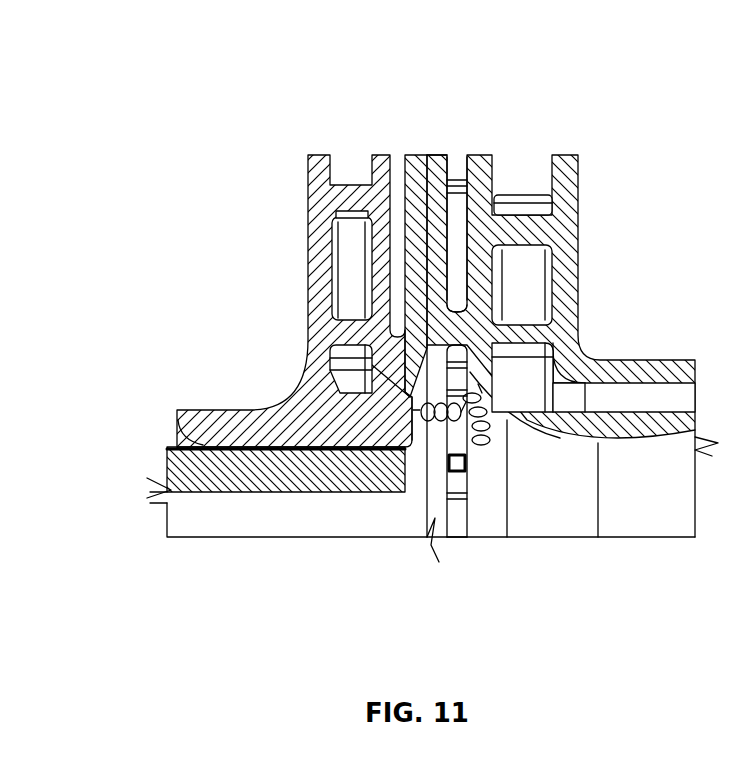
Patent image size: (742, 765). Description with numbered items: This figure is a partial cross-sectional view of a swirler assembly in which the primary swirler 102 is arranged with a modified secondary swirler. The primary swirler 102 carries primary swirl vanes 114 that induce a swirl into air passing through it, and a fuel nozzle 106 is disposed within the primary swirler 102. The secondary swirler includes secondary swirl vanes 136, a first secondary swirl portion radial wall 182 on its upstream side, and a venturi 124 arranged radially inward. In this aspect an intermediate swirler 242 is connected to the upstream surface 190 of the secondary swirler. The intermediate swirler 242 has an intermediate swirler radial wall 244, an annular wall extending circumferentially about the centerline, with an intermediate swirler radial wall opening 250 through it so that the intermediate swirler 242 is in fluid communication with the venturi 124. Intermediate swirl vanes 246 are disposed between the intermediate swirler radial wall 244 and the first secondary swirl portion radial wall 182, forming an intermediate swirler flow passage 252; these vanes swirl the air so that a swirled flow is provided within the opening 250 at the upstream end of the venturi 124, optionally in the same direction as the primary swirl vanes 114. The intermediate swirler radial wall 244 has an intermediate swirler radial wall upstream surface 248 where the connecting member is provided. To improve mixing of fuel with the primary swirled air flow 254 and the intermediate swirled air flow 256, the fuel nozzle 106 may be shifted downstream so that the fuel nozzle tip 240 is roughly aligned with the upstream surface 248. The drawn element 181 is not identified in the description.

The primary swirler 102 is at (294, 229).
The primary swirl vanes 114 is at (349, 236).
The intermediate swirler radial wall upstream surface 248 is at (427, 313).
The housing block 181 is at (570, 237).
The intermediate swirler radial wall 244 is at (437, 168).
The intermediate swirl vanes 246 is at (455, 236).
The first secondary swirl portion radial wall 182 is at (473, 165).
The intermediate swirler flow passage 252 is at (478, 258).
The intermediate swirler 242 is at (457, 247).
The secondary swirl vanes 136 is at (522, 295).
The upstream surface 190 is at (520, 425).
The venturi 124 is at (635, 430).
The fuel nozzle 106 is at (184, 458).
The primary swirled air flow 254 is at (408, 450).
The fuel nozzle tip 240 is at (437, 513).
The intermediate swirler radial wall opening 250 is at (437, 425).
The intermediate swirled air flow 256 is at (477, 441).